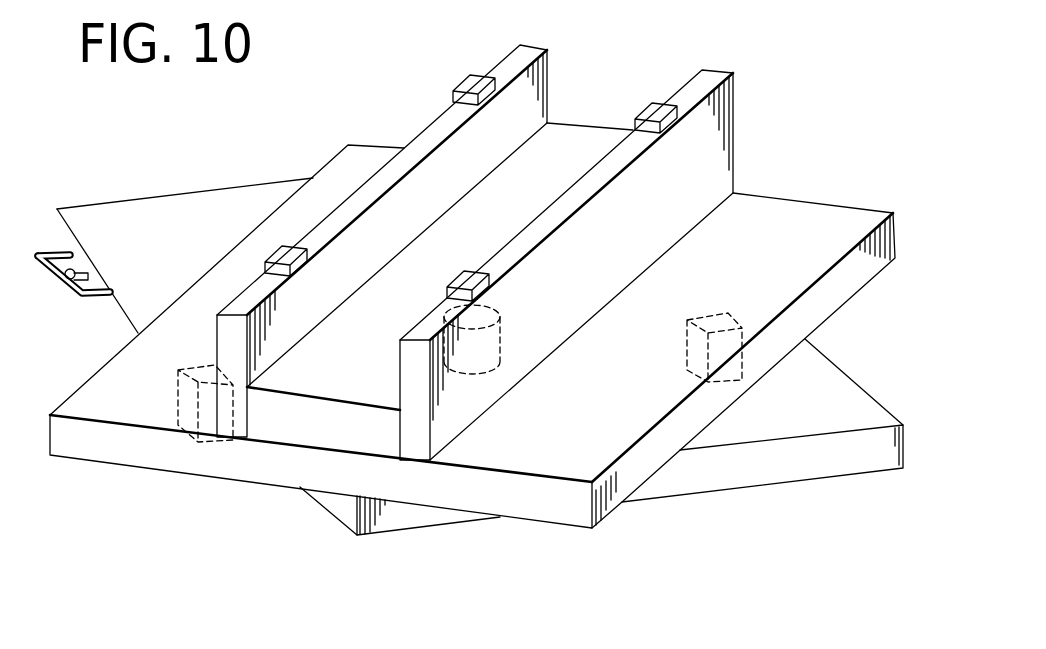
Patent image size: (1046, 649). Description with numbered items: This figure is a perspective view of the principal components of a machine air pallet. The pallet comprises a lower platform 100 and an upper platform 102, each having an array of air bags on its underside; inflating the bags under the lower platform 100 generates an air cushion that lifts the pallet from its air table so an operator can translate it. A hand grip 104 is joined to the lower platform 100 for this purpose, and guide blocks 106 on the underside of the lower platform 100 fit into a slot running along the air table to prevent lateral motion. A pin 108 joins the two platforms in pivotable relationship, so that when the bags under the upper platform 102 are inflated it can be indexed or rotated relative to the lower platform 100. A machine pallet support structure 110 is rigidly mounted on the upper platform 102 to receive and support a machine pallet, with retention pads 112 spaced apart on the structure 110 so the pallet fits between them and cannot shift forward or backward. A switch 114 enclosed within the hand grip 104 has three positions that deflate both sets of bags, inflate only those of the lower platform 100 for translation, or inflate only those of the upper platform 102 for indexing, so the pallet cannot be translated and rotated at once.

The lower platform 100 is at (162, 205).
The upper platform 102 is at (355, 152).
The hand grip 104 is at (37, 247).
The guide blocks 106 is at (722, 318).
The pin 108 is at (495, 318).
The machine pallet support structure 110 is at (548, 84).
The machine pallet retention pads 112 is at (462, 75).
The switch 114 is at (60, 292).